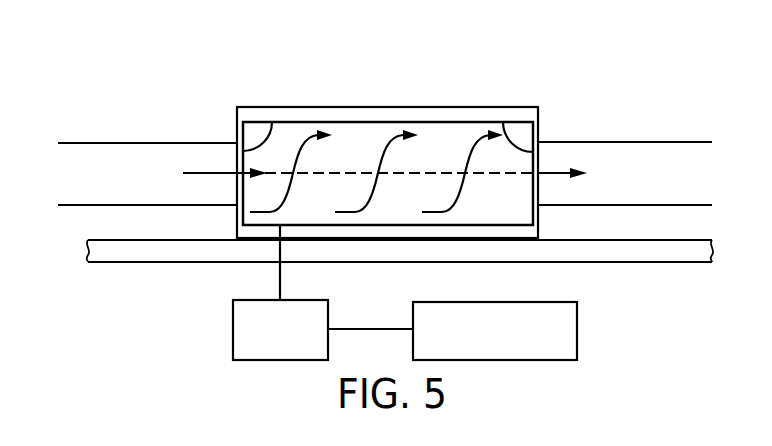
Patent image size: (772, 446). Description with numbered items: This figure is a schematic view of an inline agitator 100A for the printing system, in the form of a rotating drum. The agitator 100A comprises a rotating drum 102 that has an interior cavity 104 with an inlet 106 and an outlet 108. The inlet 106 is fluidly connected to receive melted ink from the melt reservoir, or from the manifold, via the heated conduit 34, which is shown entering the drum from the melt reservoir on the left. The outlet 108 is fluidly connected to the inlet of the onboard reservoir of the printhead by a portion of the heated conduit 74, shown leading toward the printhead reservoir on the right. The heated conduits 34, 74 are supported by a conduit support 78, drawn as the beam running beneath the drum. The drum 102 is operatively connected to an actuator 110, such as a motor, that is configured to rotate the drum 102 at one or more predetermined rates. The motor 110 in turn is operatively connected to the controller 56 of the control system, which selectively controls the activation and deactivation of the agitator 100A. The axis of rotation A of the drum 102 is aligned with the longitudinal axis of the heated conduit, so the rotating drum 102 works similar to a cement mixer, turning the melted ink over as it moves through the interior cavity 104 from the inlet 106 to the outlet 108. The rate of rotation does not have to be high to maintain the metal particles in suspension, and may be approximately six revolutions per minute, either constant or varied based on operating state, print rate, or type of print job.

The agitator 100A is at (190, 88).
The heated conduit 34 is at (389, 143).
The heated conduit 74 is at (105, 142).
The rotating drum 102 is at (300, 121).
The interior cavity 104 is at (366, 126).
The inlet 106 is at (272, 122).
The outlet 108 is at (503, 122).
The axis of rotation A is at (435, 170).
The actuator 110 is at (328, 312).
The controller 56 is at (577, 312).
The conduit support 78 is at (663, 262).